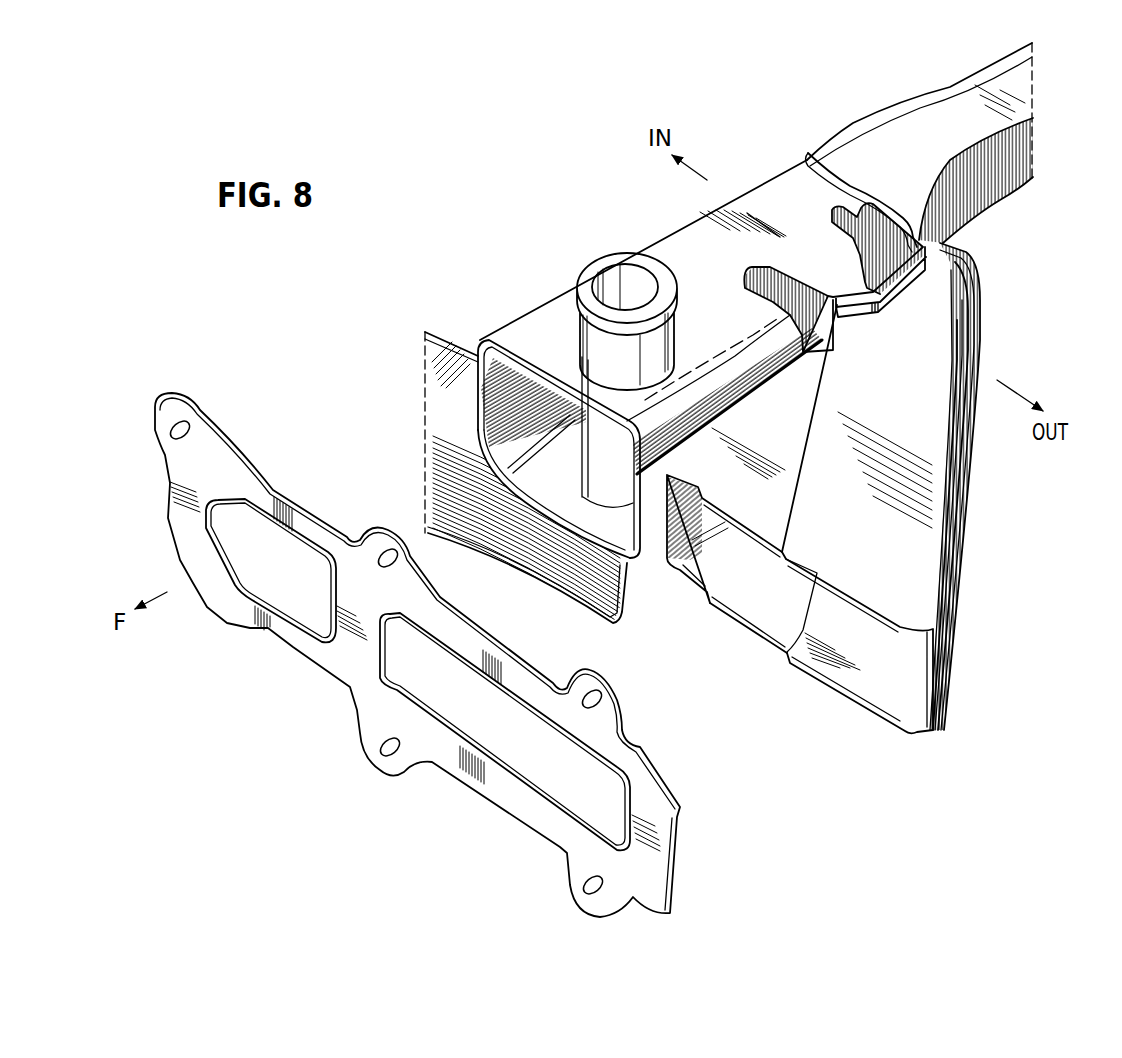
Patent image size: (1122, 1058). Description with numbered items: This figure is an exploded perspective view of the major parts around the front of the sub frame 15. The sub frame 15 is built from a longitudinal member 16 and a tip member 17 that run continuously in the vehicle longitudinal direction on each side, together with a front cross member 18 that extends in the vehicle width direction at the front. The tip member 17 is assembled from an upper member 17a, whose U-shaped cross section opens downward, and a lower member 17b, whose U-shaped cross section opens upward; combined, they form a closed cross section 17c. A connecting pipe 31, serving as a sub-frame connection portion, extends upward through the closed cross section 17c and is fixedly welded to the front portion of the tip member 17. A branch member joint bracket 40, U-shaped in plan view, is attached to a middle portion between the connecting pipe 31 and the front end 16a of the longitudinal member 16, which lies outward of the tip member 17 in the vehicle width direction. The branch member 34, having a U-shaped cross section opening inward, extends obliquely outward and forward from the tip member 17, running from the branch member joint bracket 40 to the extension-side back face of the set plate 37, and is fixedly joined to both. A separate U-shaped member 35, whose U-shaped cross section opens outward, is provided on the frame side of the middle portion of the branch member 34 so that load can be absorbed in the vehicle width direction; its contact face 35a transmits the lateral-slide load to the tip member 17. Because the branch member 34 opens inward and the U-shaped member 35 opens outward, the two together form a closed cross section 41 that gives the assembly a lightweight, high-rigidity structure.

The sub frame 15 is at (996, 219).
The longitudinal member 16 is at (931, 148).
The front end of the longitudinal member 16a is at (840, 183).
The tip member 17 is at (583, 367).
The upper member 17a is at (521, 347).
The lower member 17b is at (525, 500).
The closed cross section 17c is at (512, 446).
The front cross member 18 is at (448, 340).
The connecting pipe 31 is at (604, 258).
The branch member 34 is at (858, 488).
The U-shaped member 35 is at (785, 408).
The contact face 35a is at (800, 604).
The set plate 37 is at (270, 480).
The branch member joint bracket 40 is at (905, 290).
The closed cross section 41 is at (776, 622).